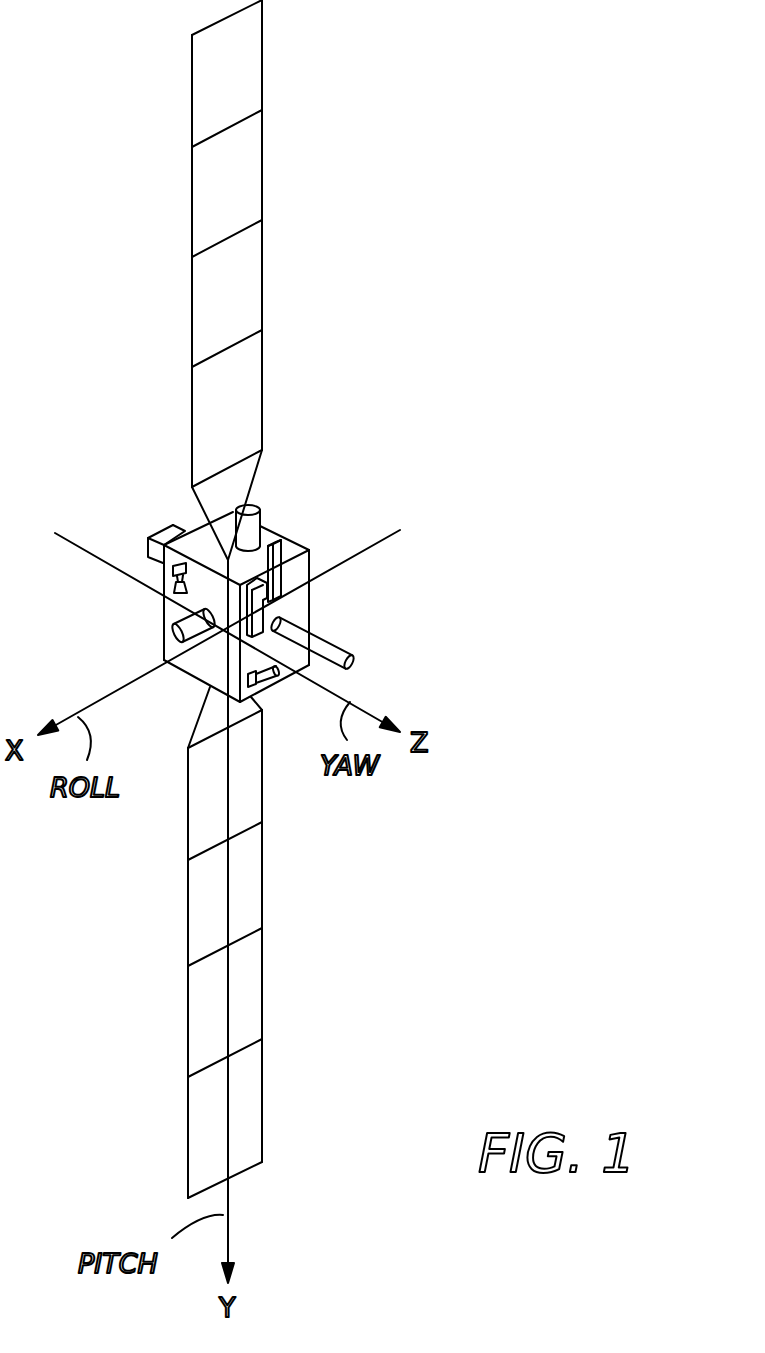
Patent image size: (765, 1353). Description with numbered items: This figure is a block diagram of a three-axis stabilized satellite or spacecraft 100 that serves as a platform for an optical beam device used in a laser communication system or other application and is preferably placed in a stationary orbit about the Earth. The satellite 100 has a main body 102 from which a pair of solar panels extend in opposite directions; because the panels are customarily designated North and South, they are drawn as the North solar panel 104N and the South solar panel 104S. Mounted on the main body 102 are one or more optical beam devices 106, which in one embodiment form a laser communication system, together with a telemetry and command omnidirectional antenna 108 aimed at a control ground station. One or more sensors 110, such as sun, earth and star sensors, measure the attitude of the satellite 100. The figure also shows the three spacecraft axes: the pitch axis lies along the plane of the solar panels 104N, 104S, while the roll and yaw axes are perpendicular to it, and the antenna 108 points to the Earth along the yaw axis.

The three-axis stabilized satellite 100 is at (347, 228).
The main body 102 is at (302, 607).
The North solar panel 104N is at (243, 178).
The South solar panel 104S is at (252, 988).
The optical beam device 106 is at (250, 530).
The telemetry and command omnidirectional antenna 108 is at (337, 651).
The sensors 110 is at (173, 542).